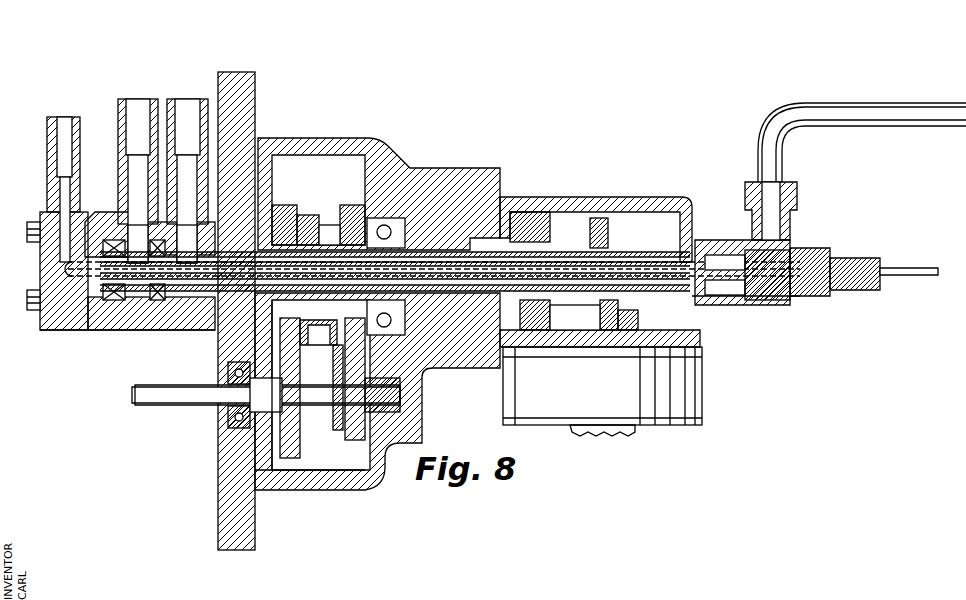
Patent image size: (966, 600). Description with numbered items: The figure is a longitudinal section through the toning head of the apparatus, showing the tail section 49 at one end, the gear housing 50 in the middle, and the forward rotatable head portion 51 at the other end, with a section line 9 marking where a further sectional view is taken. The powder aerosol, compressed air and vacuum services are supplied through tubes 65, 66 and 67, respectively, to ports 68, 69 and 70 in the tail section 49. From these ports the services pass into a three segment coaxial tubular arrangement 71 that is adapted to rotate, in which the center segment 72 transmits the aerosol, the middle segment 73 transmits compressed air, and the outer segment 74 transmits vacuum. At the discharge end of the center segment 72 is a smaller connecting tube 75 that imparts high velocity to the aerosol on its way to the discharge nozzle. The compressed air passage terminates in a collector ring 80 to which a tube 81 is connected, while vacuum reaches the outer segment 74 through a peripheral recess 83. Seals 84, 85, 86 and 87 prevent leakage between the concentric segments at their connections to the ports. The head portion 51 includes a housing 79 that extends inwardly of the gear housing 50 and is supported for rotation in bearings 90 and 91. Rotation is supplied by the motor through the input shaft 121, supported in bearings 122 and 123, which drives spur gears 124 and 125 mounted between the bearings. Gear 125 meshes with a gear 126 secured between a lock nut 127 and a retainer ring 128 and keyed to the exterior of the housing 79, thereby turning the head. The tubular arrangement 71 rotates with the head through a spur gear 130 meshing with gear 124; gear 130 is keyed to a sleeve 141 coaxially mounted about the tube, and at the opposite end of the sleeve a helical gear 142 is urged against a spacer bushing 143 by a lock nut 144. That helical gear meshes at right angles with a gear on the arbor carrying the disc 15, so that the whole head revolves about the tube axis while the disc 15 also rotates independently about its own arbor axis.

The section line 9- 9 is at (600, 185).
The disc 15 is at (690, 385).
The tail section 49 is at (80, 357).
The gear housing 50 is at (326, 138).
The forward rotatable head portion 51 is at (731, 343).
The tube 65 is at (77, 118).
The tube 66 is at (120, 99).
The tube 67 is at (205, 99).
The port 68 is at (48, 255).
The port 69 is at (137, 226).
The port 70 is at (185, 226).
The tubular arrangement 71 is at (660, 248).
The center segment 72 is at (810, 297).
The middle segment 73 is at (760, 305).
The outer segment 74 is at (702, 305).
The connecting tube 75 is at (930, 272).
The housing 79 is at (600, 200).
The collector ring 80 is at (780, 244).
The tube 81 is at (935, 128).
The peripheral recess 83 is at (700, 240).
The seal 84 is at (85, 305).
The seal 85 is at (126, 302).
The seal 86 is at (158, 302).
The seal 87 is at (212, 234).
The bearing 90 is at (400, 336).
The bearing 91 is at (506, 355).
The input shaft 121 is at (152, 408).
The bearing 122 is at (228, 431).
The bearing 123 is at (400, 410).
The spur gear 124 is at (294, 466).
The spur gear 125 is at (350, 440).
The gear 126 is at (340, 222).
The lock nut 127 is at (308, 217).
The retainer ring 128 is at (348, 210).
The spur gear 130 is at (280, 212).
The sleeve 141 is at (668, 300).
The helical gear 142 is at (604, 328).
The spacer bushing 143 is at (588, 312).
The lock nut 144 is at (634, 320).